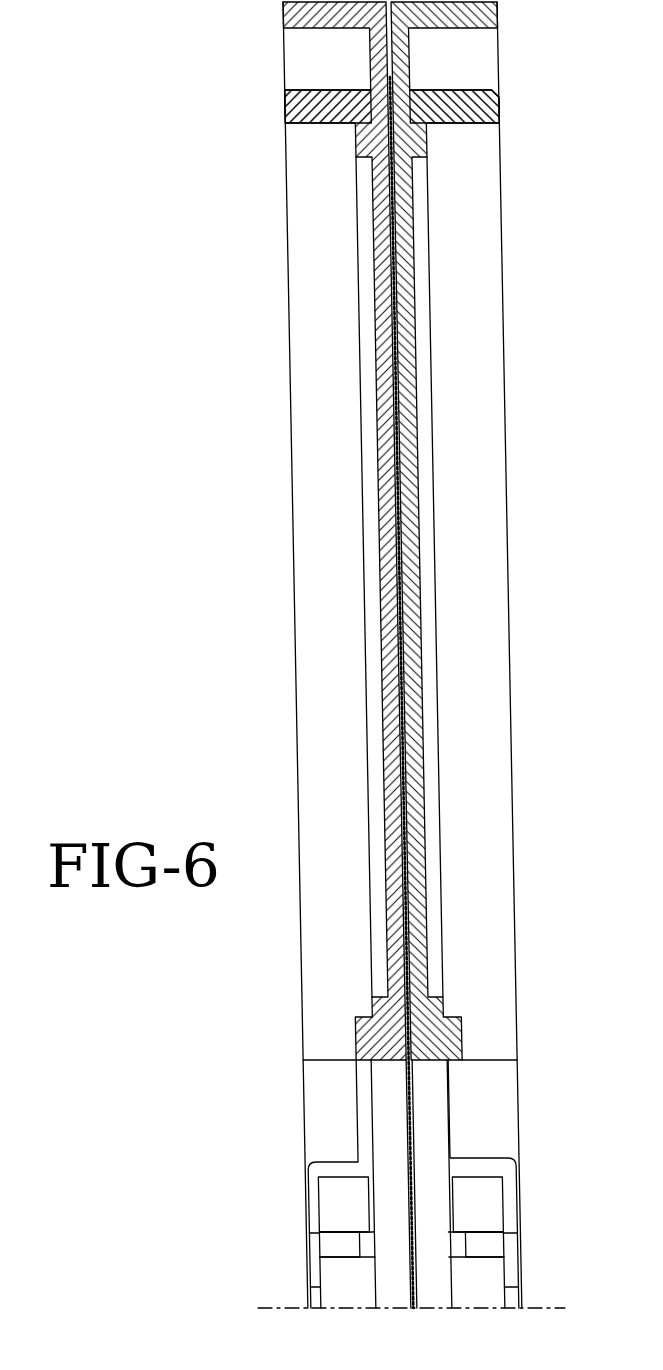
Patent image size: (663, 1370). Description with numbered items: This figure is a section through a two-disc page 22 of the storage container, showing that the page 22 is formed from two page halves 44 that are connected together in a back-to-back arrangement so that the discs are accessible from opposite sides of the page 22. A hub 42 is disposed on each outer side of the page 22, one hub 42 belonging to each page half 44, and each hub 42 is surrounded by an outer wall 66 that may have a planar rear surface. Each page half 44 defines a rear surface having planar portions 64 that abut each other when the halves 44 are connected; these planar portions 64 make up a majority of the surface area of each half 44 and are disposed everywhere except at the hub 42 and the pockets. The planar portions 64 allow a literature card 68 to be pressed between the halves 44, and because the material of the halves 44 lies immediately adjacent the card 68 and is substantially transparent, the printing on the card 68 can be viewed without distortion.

The page 22 is at (433, 655).
The hub 42 is at (412, 1184).
The page half 44 is at (402, 655).
The planar portion 64 is at (400, 531).
The outer wall 66 is at (392, 106).
The literature card 68 is at (401, 692).